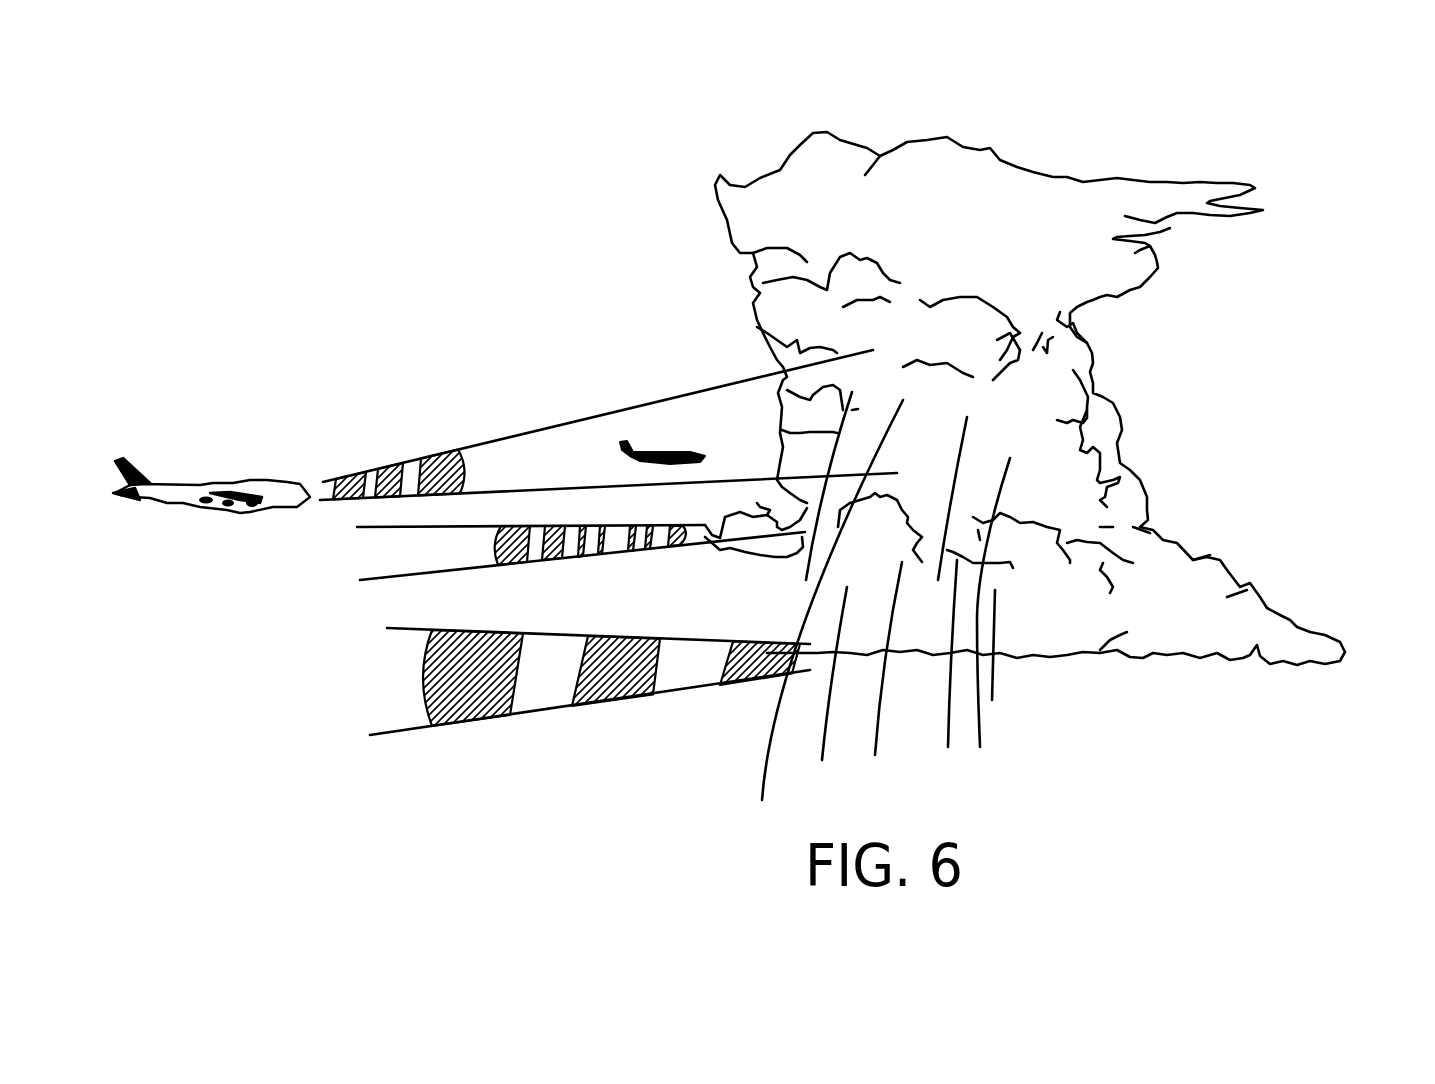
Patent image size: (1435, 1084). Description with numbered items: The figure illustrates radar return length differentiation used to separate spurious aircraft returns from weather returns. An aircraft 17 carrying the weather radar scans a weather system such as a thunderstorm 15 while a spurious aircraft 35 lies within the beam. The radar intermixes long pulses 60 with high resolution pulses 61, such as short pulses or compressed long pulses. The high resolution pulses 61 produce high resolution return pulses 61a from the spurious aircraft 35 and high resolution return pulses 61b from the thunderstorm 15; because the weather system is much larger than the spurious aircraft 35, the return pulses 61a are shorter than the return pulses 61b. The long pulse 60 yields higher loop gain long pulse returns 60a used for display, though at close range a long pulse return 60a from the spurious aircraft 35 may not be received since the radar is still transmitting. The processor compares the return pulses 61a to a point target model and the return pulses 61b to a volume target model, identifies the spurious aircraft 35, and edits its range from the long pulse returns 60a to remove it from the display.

The thunderstorm 15 is at (1228, 326).
The aircraft 17 is at (213, 483).
The spurious aircraft 35 is at (673, 451).
The long pulse 60 is at (348, 476).
The high resolution pulse 61 is at (393, 470).
The long pulse return 60a is at (590, 707).
The high resolution return pulse from spurious aircraft 61a is at (600, 560).
The high resolution return pulse from thunderstorm 61b is at (678, 514).